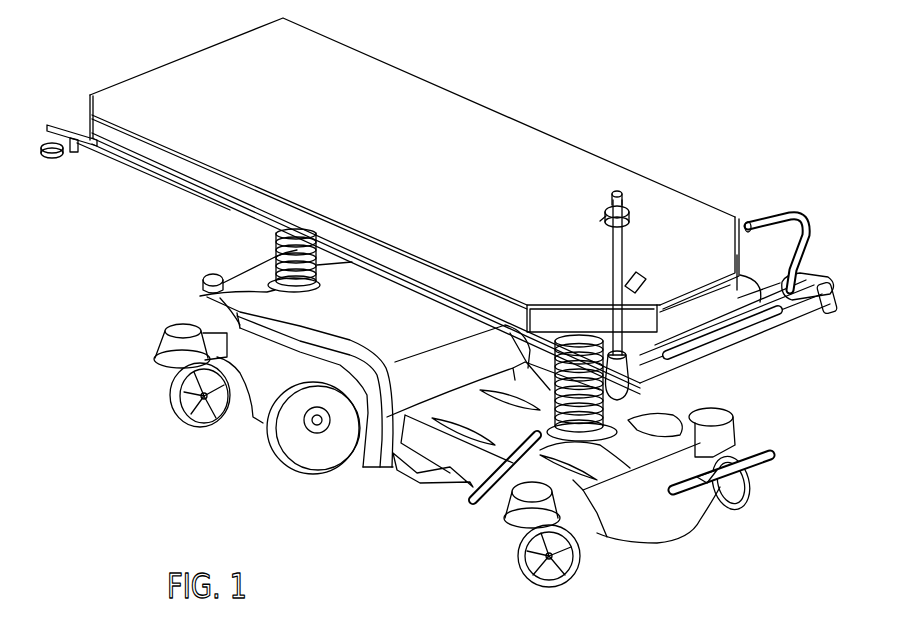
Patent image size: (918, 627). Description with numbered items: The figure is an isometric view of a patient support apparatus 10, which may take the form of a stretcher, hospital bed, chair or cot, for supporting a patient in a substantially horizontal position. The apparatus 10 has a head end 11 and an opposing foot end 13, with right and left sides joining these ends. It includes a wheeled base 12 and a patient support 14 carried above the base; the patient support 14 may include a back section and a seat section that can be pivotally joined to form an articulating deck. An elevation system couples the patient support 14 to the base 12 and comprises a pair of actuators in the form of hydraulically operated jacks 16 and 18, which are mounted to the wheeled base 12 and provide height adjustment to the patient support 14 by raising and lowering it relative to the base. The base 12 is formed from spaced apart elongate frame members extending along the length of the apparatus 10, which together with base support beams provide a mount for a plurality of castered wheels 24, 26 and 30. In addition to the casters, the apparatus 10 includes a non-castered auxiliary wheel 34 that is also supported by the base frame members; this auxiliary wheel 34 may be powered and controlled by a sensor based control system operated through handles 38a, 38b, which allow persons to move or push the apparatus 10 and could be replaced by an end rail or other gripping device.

The patient support apparatus 10 is at (676, 121).
The head end 11 is at (707, 302).
The wheeled base 12 is at (283, 307).
The foot end 13 is at (147, 72).
The patient support 14 is at (540, 130).
The hydraulically operated jack 16 is at (273, 243).
The hydraulically operated jack 18 is at (477, 498).
The castered wheel 24 is at (748, 492).
The castered wheel 26 is at (522, 560).
The castered wheel 30 is at (210, 427).
The non-castered auxiliary wheel 34 is at (317, 462).
The handle 38a is at (640, 278).
The handle 38b is at (802, 216).